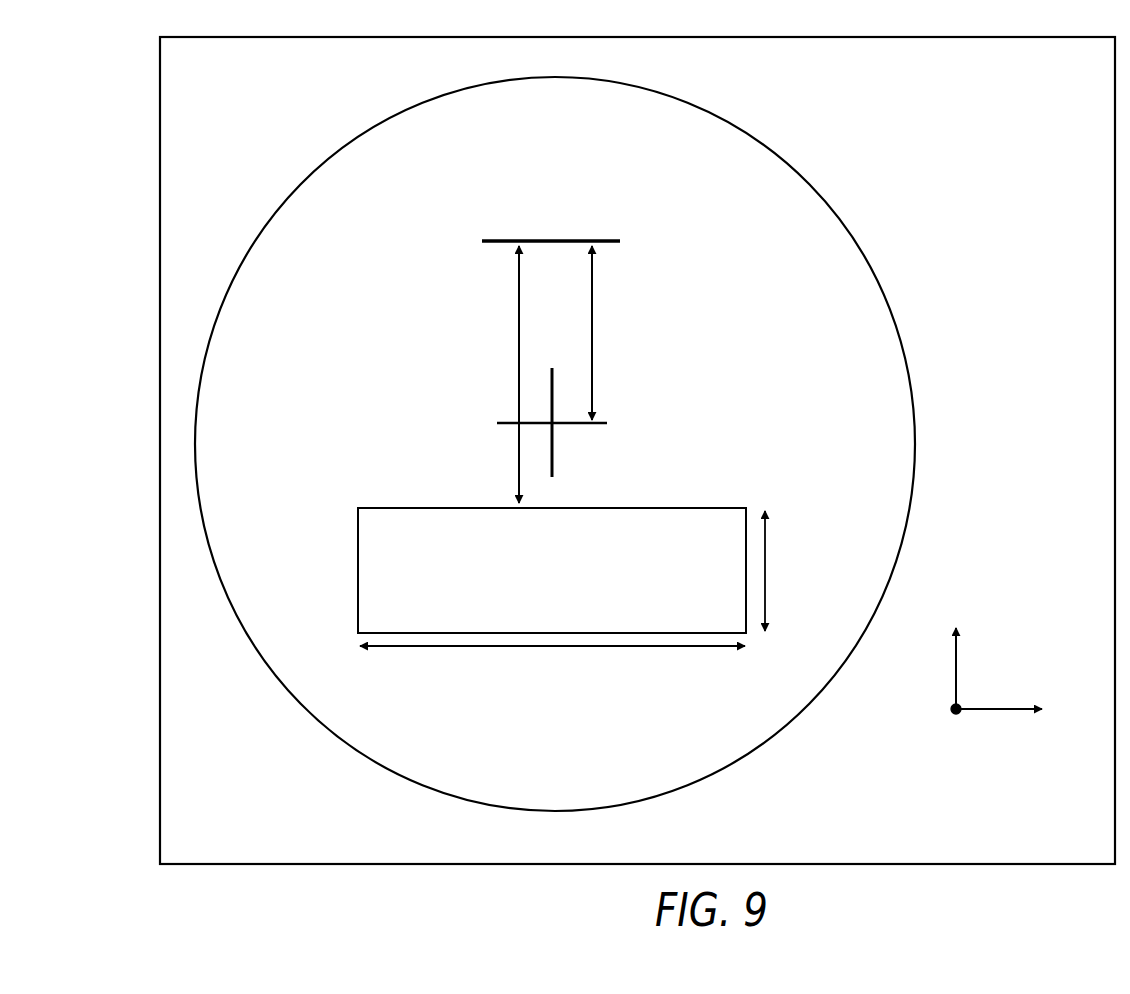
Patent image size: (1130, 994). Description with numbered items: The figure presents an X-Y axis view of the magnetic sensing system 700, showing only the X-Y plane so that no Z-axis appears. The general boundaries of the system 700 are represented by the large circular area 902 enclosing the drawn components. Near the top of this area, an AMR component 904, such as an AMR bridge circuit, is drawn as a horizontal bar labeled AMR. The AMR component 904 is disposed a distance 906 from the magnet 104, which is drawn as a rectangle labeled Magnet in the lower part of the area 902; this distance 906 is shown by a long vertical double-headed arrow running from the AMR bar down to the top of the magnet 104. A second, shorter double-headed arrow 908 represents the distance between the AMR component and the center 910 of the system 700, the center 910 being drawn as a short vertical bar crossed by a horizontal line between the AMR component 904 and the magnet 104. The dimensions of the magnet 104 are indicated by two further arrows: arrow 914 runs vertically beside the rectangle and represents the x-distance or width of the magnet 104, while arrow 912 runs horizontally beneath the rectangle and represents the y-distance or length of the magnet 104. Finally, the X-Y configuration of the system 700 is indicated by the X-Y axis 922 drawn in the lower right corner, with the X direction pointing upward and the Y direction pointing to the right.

The magnetic sensing system 700 is at (1098, 90).
The area 902 is at (796, 227).
The AMR component 904 is at (506, 240).
The distance 906 is at (518, 358).
The arrow 908 is at (593, 352).
The center 910 is at (556, 445).
The magnet 104 is at (427, 603).
The arrow 912 is at (457, 648).
The arrow 914 is at (770, 552).
The X-Y axis 922 is at (949, 730).